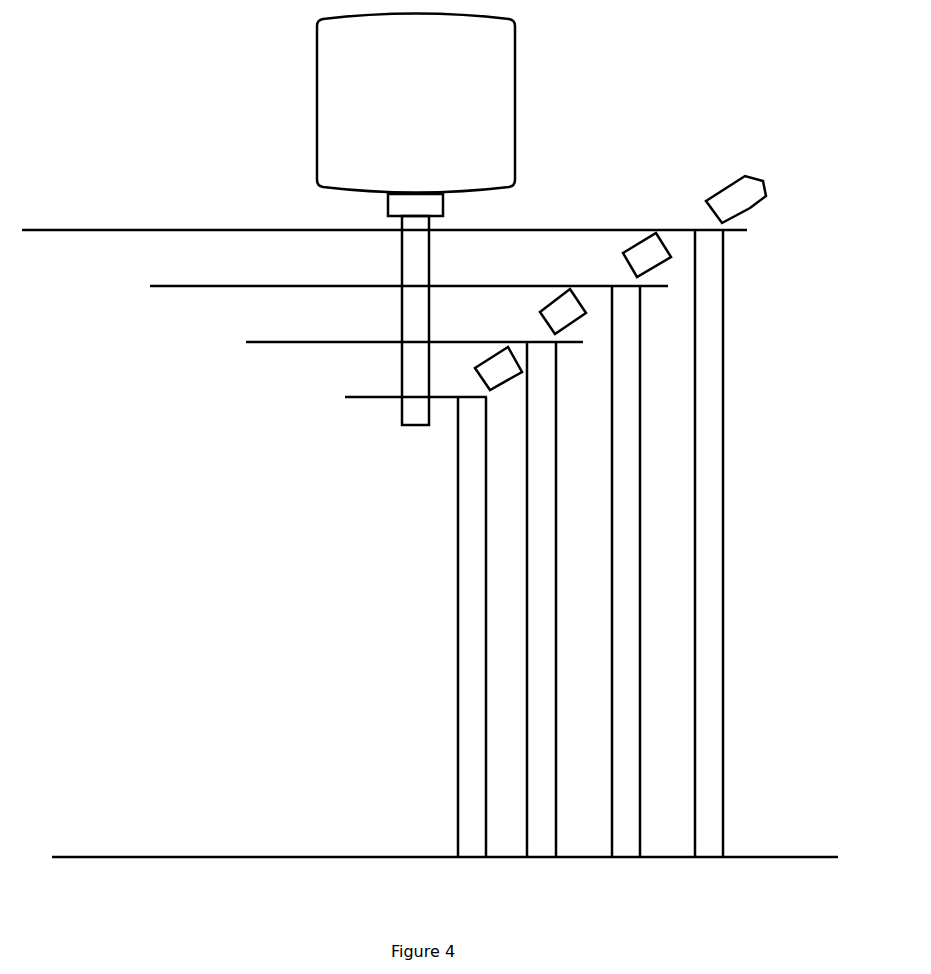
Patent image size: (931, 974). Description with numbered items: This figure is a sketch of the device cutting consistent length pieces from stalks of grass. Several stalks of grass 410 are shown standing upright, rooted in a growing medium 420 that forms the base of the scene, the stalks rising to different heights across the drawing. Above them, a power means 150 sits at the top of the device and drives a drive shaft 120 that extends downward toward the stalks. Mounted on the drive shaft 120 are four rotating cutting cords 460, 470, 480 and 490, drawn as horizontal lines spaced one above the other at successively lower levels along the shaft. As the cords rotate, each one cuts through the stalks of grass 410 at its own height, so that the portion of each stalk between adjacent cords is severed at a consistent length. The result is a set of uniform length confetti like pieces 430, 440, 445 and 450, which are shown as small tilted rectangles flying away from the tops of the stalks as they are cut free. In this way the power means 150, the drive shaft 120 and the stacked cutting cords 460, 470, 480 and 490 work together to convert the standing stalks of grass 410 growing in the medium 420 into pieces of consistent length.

The power means 150 is at (515, 62).
The drive shaft 120 is at (402, 405).
The stalks of grass 410 is at (725, 564).
The growing medium 420 is at (377, 857).
The confetti like piece 430 is at (750, 208).
The confetti like piece 440 is at (655, 268).
The sensor 445 is at (573, 323).
The confetti like piece 450 is at (508, 380).
The rotating cutting cord 460 is at (187, 229).
The rotating cutting cord 470 is at (200, 284).
The rotating cutting cord 480 is at (297, 341).
The rotating cutting cord 490 is at (350, 397).